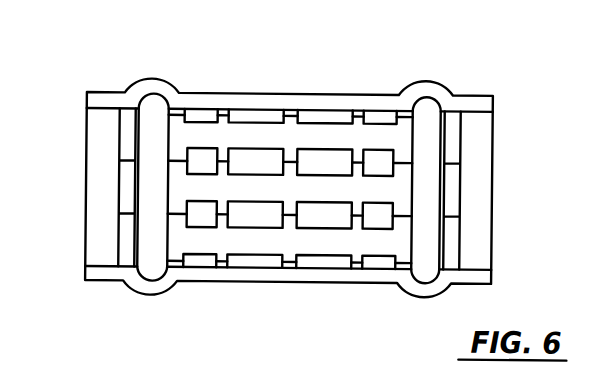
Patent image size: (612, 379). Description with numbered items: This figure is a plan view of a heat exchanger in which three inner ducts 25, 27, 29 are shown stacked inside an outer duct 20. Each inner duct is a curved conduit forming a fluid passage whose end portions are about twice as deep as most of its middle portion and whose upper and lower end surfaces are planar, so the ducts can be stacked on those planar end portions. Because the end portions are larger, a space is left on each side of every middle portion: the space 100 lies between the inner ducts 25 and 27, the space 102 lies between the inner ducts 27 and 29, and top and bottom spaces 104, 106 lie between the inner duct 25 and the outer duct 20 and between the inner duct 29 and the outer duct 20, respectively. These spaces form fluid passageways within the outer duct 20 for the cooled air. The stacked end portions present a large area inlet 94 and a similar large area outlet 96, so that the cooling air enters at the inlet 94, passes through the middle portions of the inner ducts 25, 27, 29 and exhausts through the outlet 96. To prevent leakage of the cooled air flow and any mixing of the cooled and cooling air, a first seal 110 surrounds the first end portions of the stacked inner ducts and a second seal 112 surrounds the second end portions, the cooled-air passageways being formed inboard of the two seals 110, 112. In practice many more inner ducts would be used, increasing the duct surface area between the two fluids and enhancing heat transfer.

The outer duct 20 is at (194, 102).
The inner duct 25 is at (353, 112).
The inner duct 27 is at (353, 175).
The inner duct 29 is at (352, 241).
The inlet 94 is at (460, 124).
The outlet 96 is at (118, 147).
The space 100 is at (258, 158).
The space 102 is at (256, 212).
The top space 104 is at (258, 113).
The bottom space 106 is at (378, 258).
The first seal 110 is at (151, 109).
The second seal 112 is at (425, 112).